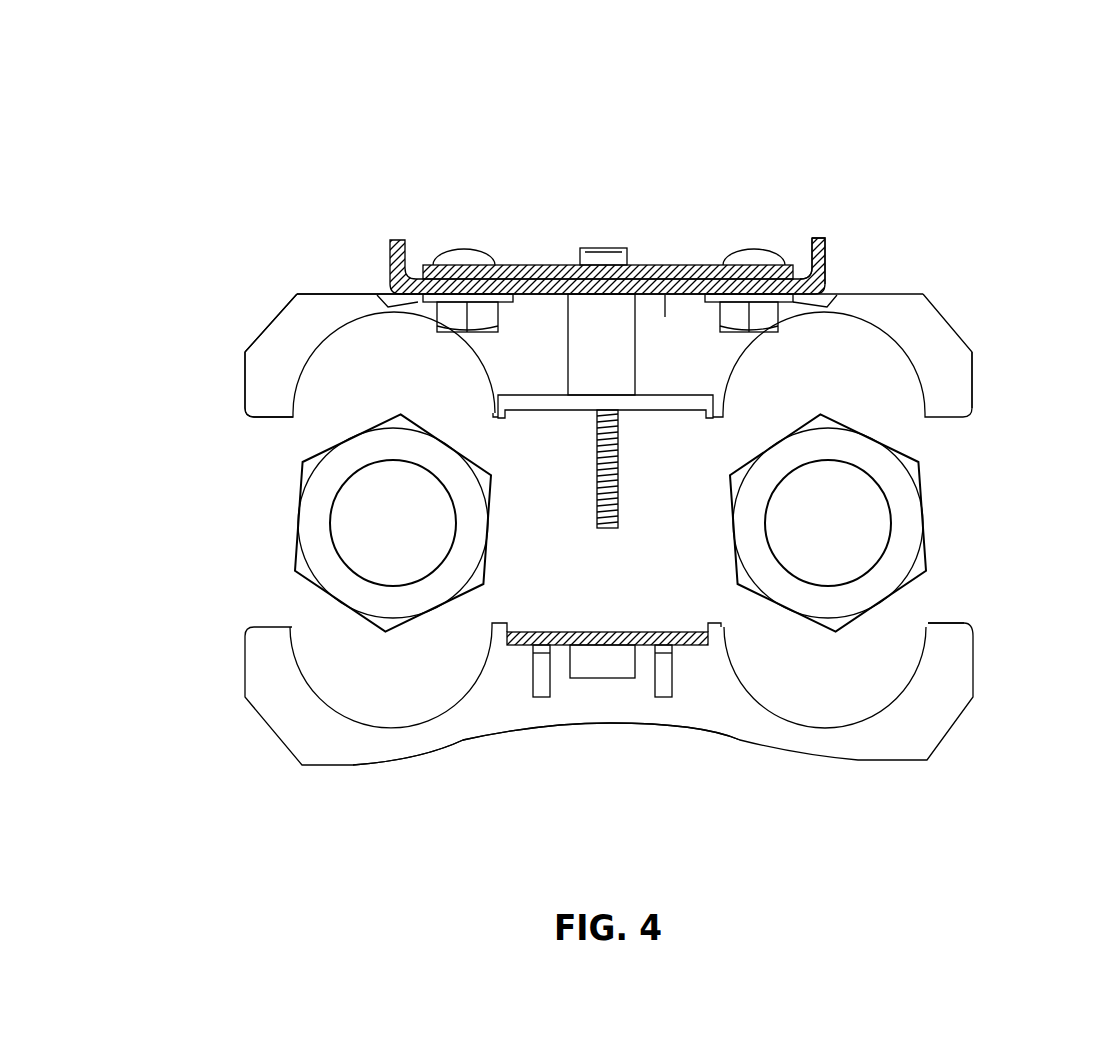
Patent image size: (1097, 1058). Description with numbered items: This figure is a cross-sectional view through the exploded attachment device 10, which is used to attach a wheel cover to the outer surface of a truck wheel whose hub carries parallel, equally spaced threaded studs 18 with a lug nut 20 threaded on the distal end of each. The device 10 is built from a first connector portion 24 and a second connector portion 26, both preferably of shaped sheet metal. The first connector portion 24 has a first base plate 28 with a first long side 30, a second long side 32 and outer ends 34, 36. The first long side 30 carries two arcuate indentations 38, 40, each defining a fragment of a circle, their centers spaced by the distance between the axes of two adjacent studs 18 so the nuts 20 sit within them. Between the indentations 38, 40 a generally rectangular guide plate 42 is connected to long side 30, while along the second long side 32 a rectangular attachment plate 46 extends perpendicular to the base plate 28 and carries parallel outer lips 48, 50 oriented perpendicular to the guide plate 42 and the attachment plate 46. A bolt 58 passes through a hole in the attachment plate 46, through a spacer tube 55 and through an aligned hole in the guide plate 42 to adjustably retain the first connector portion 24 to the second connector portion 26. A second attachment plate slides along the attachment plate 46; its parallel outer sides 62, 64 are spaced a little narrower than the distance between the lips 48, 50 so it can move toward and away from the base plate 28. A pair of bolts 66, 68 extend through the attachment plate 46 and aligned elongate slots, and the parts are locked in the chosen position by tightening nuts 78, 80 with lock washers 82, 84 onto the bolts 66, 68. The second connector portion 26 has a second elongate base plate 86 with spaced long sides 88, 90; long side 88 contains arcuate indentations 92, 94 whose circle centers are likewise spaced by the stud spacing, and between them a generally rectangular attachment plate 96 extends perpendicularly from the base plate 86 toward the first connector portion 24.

The attachment device 10 is at (570, 162).
The threaded studs 18 is at (338, 522).
The lug nut 20 is at (299, 486).
The first connector portion 24 is at (900, 288).
The second connector portion 26 is at (812, 760).
The first base plate 28 is at (262, 335).
The first long side 30 is at (267, 422).
The second long side 32 is at (302, 293).
The outer end 34 is at (240, 395).
The outer end 36 is at (975, 371).
The arcuate indentation 38 is at (378, 337).
The arcuate indentation 40 is at (831, 338).
The guide plate 42 is at (667, 413).
The attachment plate 46 is at (665, 317).
The outer lip 48 is at (391, 252).
The outer lip 50 is at (826, 242).
The spacer tube 55 is at (565, 322).
The bolt 58 is at (595, 487).
The outer side 62 is at (423, 273).
The outer side 64 is at (797, 267).
The bolt 66 is at (468, 252).
The bolt 68 is at (755, 249).
The nut 78 is at (504, 324).
The nut 80 is at (718, 320).
The lock washer 82 is at (377, 295).
The lock washer 84 is at (837, 295).
The second elongate base plate 86 is at (466, 742).
The long side 88 is at (952, 624).
The long side 90 is at (612, 727).
The arcuate indentation 92 is at (342, 710).
The arcuate indentation 94 is at (760, 681).
The attachment plate 96 is at (572, 632).